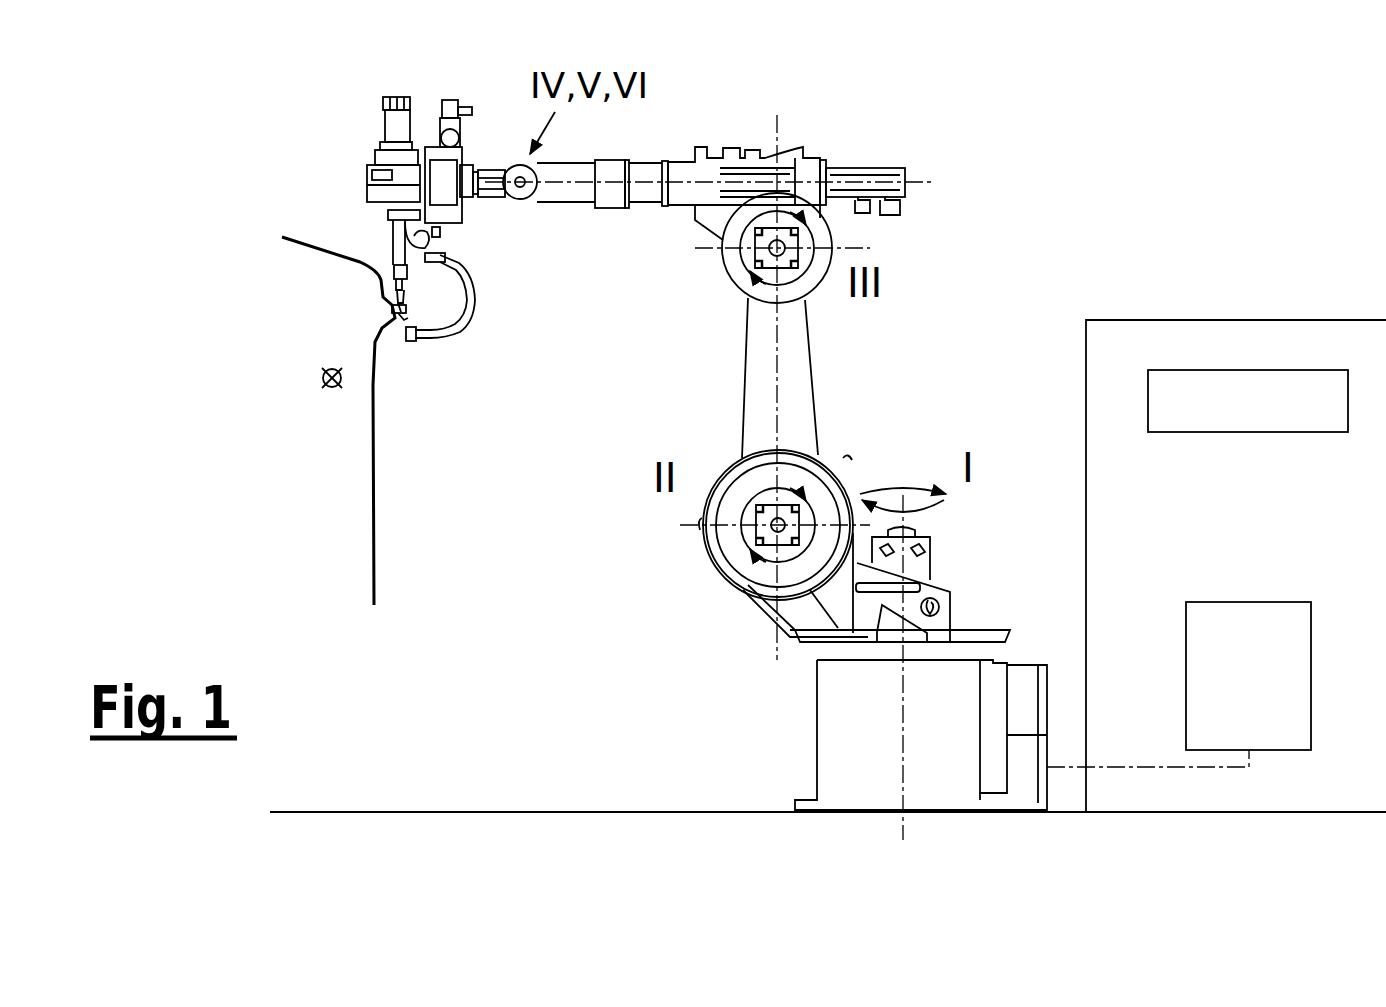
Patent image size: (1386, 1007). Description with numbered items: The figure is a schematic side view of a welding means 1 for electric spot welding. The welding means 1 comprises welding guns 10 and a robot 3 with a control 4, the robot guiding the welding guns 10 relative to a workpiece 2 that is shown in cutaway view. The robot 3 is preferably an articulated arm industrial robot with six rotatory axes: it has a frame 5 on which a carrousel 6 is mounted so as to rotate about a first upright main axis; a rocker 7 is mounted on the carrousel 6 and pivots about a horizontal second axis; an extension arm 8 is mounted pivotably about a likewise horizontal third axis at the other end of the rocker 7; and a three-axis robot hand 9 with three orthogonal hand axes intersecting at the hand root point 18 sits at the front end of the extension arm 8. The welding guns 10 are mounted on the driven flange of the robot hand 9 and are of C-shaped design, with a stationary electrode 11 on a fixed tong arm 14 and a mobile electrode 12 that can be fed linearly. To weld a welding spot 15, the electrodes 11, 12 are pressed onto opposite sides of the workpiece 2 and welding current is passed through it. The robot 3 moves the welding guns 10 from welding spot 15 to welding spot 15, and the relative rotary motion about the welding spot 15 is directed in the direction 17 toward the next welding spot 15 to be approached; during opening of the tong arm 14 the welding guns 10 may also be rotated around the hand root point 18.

The welding means 1 is at (205, 311).
The workpiece 2 is at (372, 490).
The robot 3 is at (823, 440).
The control 4 is at (1302, 345).
The frame 5 is at (848, 748).
The carrousel 6 is at (948, 598).
The rocker 7 is at (758, 357).
The extension arm 8 is at (684, 160).
The robot hand 9 is at (515, 165).
The welding guns 10 is at (393, 132).
The stationary electrode 11 is at (399, 322).
The mobile electrode 12 is at (387, 307).
The tong arm 14 is at (458, 323).
The welding spot 15 is at (405, 309).
The direction 17 is at (323, 390).
The hand root point 18 is at (519, 200).